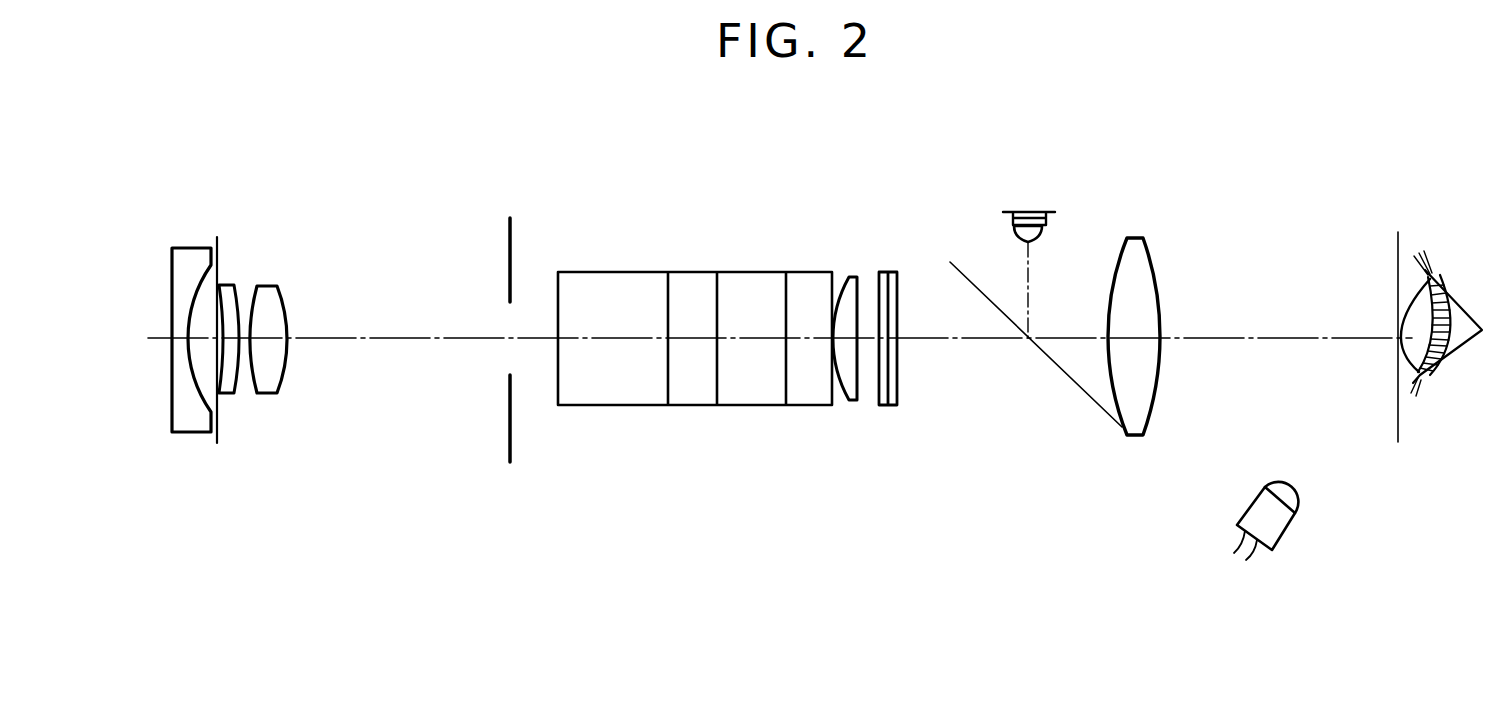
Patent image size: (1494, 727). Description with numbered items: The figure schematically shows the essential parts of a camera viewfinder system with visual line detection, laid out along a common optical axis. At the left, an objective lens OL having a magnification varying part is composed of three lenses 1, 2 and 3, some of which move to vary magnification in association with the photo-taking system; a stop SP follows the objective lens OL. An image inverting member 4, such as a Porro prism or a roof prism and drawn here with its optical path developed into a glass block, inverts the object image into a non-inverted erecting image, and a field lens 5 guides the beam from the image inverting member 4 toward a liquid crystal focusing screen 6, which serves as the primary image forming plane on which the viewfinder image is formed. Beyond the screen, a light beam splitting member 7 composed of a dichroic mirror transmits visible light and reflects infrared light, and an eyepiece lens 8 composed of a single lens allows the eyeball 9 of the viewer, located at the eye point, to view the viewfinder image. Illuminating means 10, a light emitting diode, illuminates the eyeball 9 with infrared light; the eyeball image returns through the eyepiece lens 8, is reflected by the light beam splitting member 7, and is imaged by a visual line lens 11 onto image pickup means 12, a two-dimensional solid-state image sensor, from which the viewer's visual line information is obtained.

The objective lens OL is at (162, 176).
The lens 1 is at (192, 248).
The lens 2 is at (226, 285).
The lens 3 is at (266, 286).
The stop SP is at (510, 233).
The image inverting member 4 is at (605, 272).
The field lens 5 is at (851, 277).
The liquid crystal focusing screen 6 is at (888, 272).
The light beam splitting member 7 is at (1100, 410).
The eyepiece lens 8 is at (1149, 258).
The eyeball 9 is at (1437, 285).
The illuminating means 10 is at (1284, 528).
The visual line lens 11 is at (1042, 234).
The image pickup means 12 is at (1028, 212).